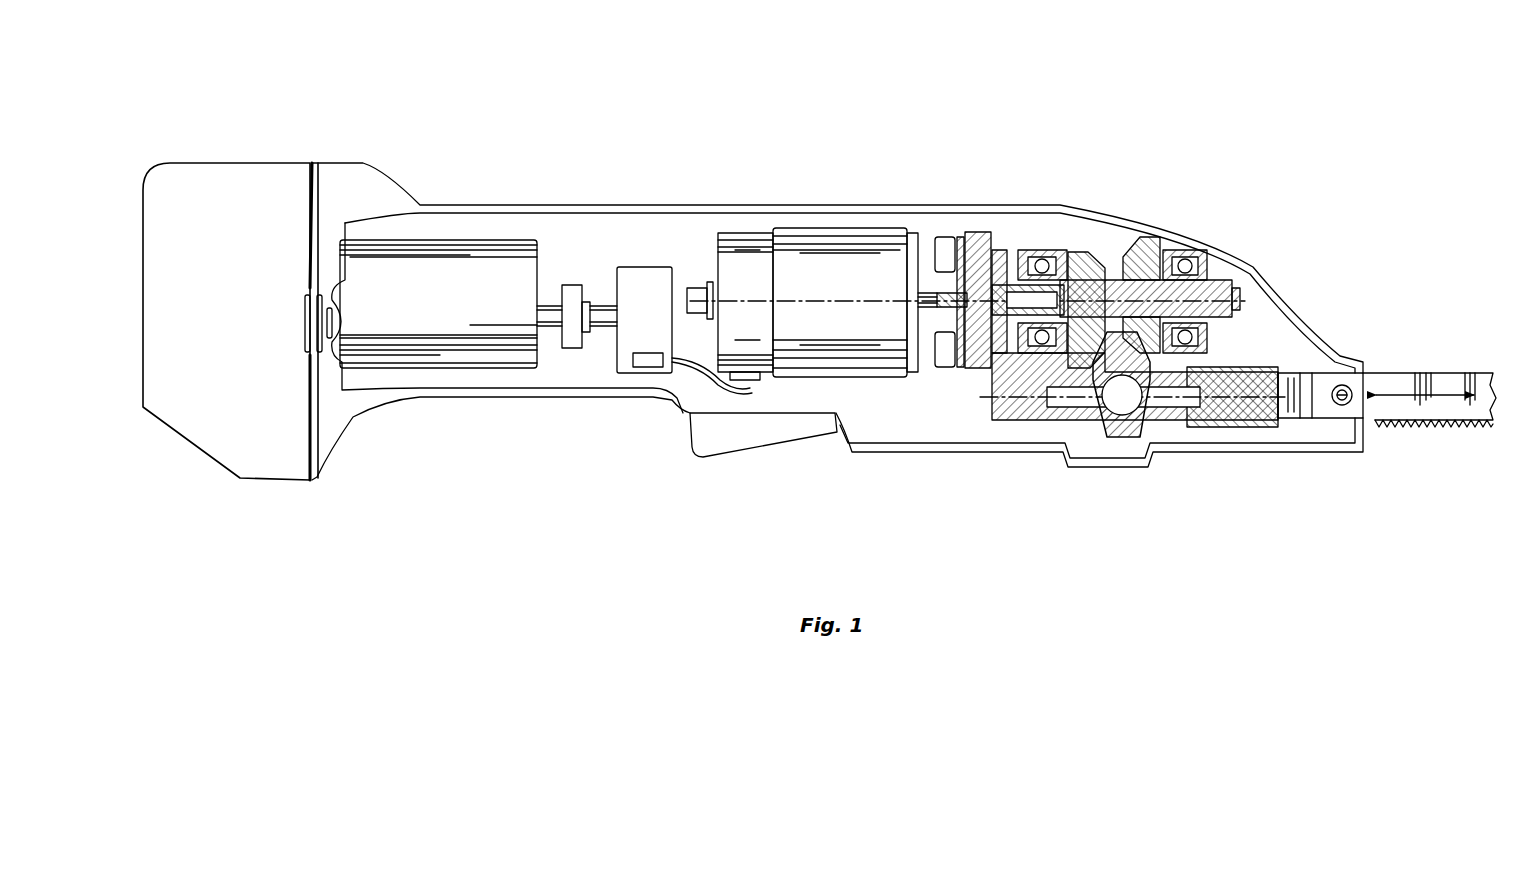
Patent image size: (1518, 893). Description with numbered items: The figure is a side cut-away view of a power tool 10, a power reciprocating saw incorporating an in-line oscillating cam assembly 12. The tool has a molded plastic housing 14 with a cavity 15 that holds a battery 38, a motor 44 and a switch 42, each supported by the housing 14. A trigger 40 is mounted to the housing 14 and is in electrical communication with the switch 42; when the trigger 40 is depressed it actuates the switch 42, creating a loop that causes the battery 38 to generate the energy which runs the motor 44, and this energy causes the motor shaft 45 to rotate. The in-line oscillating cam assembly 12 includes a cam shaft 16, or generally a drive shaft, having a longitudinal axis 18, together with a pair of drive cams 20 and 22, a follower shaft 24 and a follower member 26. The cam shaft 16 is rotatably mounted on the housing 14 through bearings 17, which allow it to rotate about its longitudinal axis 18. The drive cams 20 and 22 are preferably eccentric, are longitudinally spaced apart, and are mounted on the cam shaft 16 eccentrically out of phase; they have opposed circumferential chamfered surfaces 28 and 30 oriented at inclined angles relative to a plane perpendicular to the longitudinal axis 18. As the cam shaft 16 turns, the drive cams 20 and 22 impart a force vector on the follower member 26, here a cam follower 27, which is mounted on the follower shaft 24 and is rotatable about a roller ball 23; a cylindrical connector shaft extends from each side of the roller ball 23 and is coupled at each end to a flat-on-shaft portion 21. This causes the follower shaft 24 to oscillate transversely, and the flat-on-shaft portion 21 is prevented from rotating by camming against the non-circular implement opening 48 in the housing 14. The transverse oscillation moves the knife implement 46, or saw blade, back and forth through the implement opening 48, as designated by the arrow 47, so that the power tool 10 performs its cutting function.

The power tool 10 is at (683, 113).
The in-line oscillating cam assembly 12 is at (1110, 245).
The housing 14 is at (567, 205).
The cavity 15 is at (608, 233).
The cam shaft 16 is at (1243, 297).
The bearings 17 is at (1033, 257).
The longitudinal axis 18 is at (1265, 262).
The drive cam 20 is at (1075, 258).
The flat-on-shaft portion 21 is at (1007, 417).
The drive cam 22 is at (1170, 250).
The roller ball 23 is at (1110, 410).
The follower shaft 24 is at (1063, 408).
The follower member 26 is at (1125, 412).
The cam follower 27 is at (978, 400).
The chamfered surface 28 is at (1100, 258).
The chamfered surface 30 is at (1133, 243).
The battery 38 is at (490, 252).
The trigger 40 is at (745, 447).
The switch 42 is at (668, 250).
The motor 44 is at (788, 243).
The motor shaft 45 is at (955, 260).
The knife implement 46 is at (1420, 428).
The arrow 47 is at (1432, 385).
The implement opening 48 is at (1370, 370).